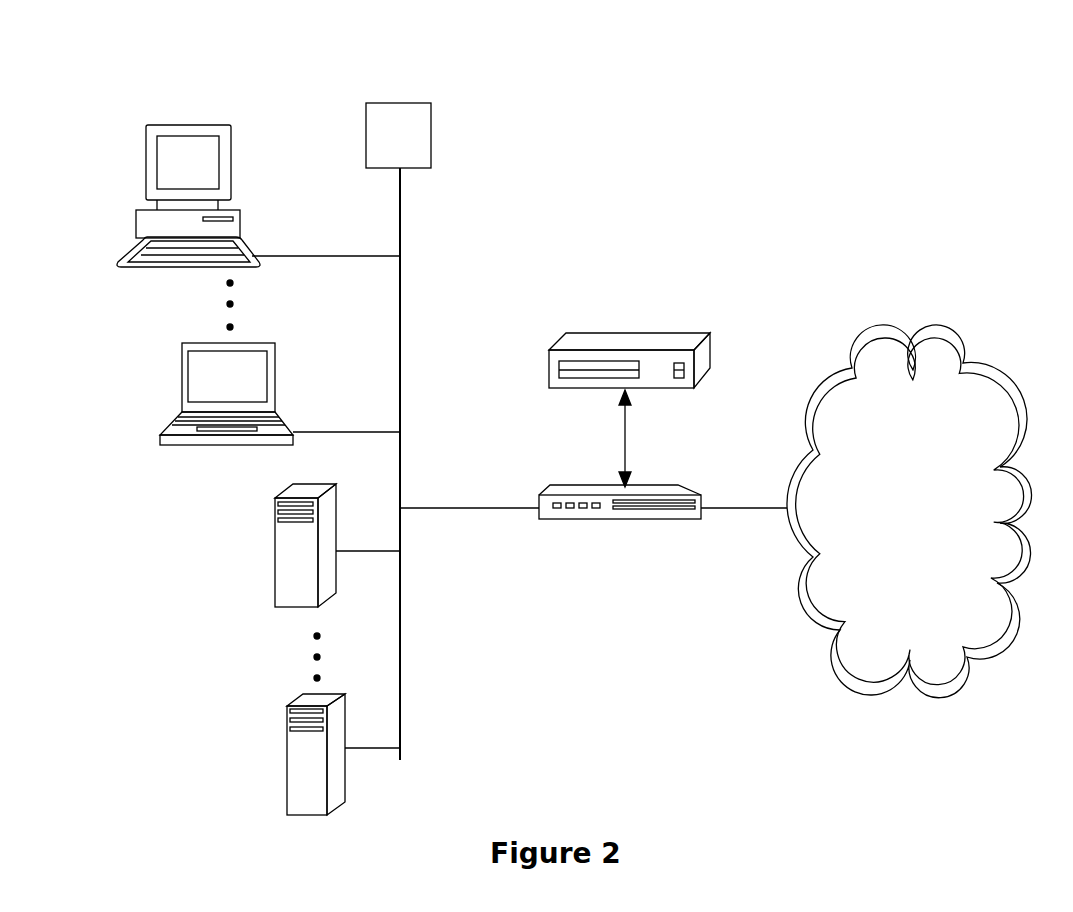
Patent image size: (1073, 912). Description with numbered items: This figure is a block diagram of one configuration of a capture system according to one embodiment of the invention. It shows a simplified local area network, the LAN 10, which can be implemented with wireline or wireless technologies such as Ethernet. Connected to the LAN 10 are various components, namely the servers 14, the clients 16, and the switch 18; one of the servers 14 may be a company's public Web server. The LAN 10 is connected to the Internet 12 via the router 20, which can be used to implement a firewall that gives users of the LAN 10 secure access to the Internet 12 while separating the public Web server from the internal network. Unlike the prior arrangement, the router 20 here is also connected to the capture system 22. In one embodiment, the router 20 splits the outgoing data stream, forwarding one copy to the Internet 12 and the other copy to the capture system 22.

The local area network (LAN) 10 is at (406, 464).
The Internet 12 is at (909, 511).
The servers 14 is at (260, 573).
The clients 16 is at (118, 233).
The switch 18 is at (408, 92).
The router 20 is at (619, 528).
The capture system 22 is at (635, 323).